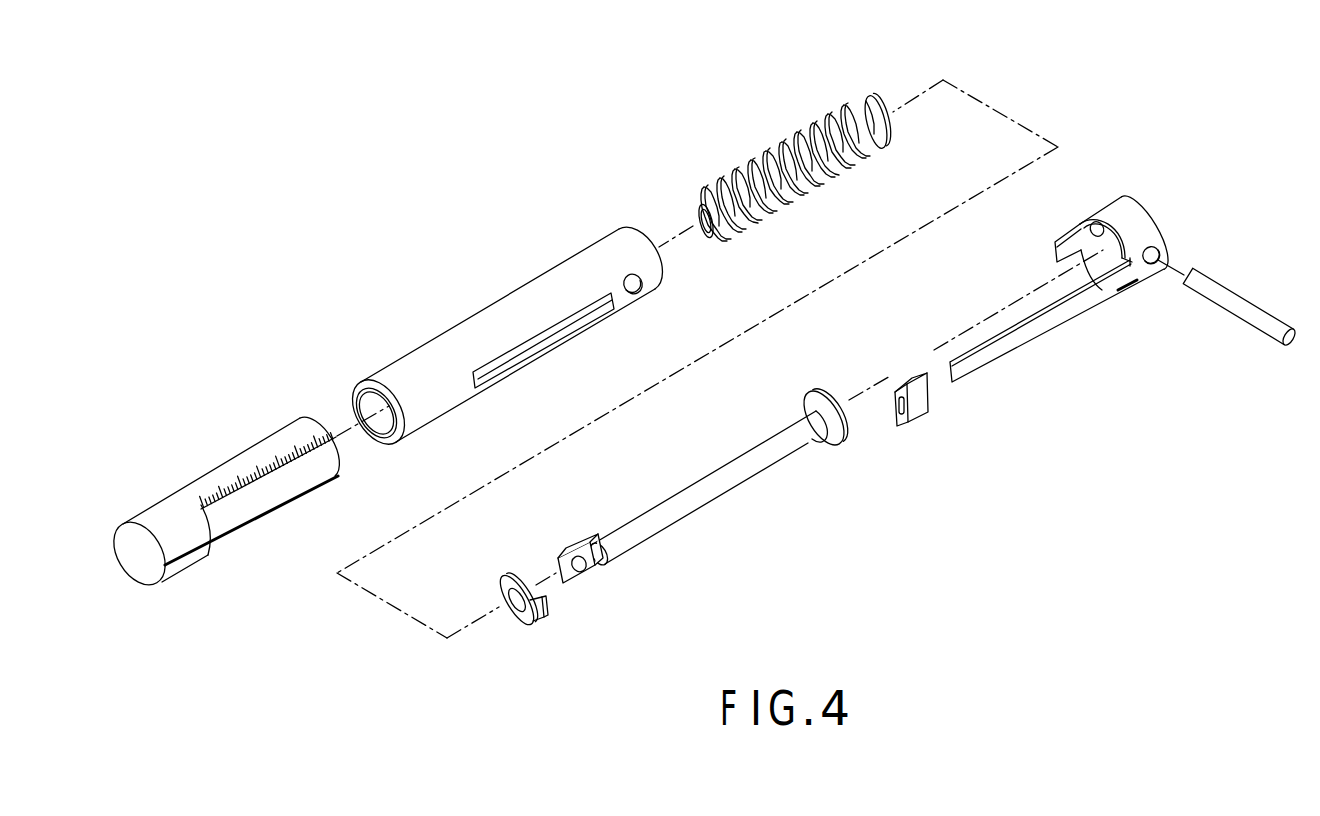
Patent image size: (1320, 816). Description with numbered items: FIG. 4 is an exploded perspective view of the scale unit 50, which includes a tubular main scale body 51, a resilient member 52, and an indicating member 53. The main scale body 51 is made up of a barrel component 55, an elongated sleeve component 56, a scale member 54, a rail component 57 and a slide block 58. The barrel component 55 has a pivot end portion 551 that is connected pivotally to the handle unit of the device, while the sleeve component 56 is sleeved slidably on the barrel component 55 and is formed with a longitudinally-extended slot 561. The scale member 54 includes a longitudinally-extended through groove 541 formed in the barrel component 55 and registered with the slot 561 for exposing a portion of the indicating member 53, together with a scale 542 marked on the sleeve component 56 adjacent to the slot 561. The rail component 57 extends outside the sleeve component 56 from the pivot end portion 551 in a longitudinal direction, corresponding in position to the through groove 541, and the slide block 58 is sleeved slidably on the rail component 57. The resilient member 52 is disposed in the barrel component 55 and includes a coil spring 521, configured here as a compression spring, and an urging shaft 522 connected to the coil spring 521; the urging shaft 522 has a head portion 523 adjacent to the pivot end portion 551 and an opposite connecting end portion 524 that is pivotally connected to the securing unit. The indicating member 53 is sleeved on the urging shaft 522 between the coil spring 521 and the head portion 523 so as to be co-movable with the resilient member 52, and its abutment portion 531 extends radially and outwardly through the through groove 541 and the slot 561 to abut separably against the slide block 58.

The scale unit 50 is at (578, 245).
The main scale body 51 is at (466, 312).
The resilient member 52 is at (793, 136).
The coil spring 521 is at (850, 110).
The urging shaft 522 is at (705, 473).
The head portion 523 is at (821, 395).
The connecting end portion 524 is at (587, 572).
The indicating member 53 is at (578, 661).
The abutment portion 531 is at (547, 615).
The scale member 54 is at (221, 460).
The through groove 541 is at (548, 338).
The scale 542 is at (277, 458).
The barrel component 55 is at (412, 372).
The pivot end portion 551 is at (643, 286).
The sleeve component 56 is at (268, 436).
The slot 561 is at (258, 514).
The rail component 57 is at (1032, 333).
The slide block 58 is at (918, 410).